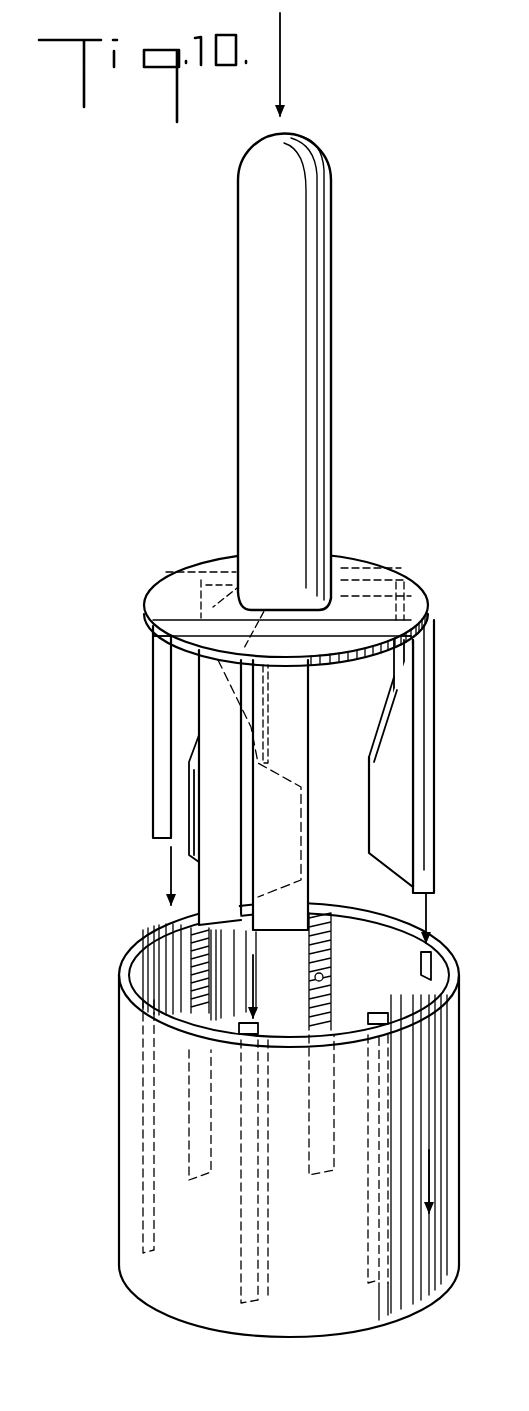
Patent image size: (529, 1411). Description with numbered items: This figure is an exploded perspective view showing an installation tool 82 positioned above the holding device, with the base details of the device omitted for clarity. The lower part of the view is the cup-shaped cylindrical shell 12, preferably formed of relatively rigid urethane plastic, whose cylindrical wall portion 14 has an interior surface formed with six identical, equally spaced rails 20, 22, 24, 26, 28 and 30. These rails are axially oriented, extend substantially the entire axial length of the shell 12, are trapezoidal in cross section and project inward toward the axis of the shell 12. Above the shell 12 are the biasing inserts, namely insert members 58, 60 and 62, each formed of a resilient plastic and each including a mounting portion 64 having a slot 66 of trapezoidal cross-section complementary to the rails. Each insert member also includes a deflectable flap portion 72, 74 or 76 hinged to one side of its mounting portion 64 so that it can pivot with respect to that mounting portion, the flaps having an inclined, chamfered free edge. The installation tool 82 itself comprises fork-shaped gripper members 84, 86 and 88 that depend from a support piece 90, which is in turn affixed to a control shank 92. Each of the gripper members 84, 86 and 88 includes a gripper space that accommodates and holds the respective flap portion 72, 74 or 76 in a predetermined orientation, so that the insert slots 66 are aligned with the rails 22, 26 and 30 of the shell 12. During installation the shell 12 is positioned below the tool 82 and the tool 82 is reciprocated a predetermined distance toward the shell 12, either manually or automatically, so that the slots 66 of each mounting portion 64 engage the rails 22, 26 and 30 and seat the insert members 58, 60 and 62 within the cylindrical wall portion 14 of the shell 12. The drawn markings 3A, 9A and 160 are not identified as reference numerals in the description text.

The container body 12 is at (464, 1140).
The container side wall 14 is at (458, 1053).
The leg receiving slot 20 is at (326, 900).
The locking tab 22 is at (432, 958).
The locking tab 24 is at (378, 1012).
The locking tab 26 is at (260, 1030).
The inner wall slot 28 is at (140, 988).
The inner wall slot 30 is at (193, 951).
The detent hole 3A is at (324, 978).
The leg 58 is at (437, 725).
The leg 60 is at (314, 797).
The cage assembly 62 is at (148, 740).
The leg 64 is at (158, 677).
The leg 66 is at (195, 562).
The tab 72 is at (398, 822).
The leg edge 74 is at (308, 782).
The projection 76 is at (190, 828).
The plunger assembly 82 is at (382, 490).
The rear leg 84 is at (393, 678).
The hole 86 is at (265, 610).
The hole 88 is at (248, 590).
The disc 90 is at (380, 557).
The rod 92 is at (323, 304).
The slanted slot 9A is at (391, 692).
The assembly 160 is at (510, 773).